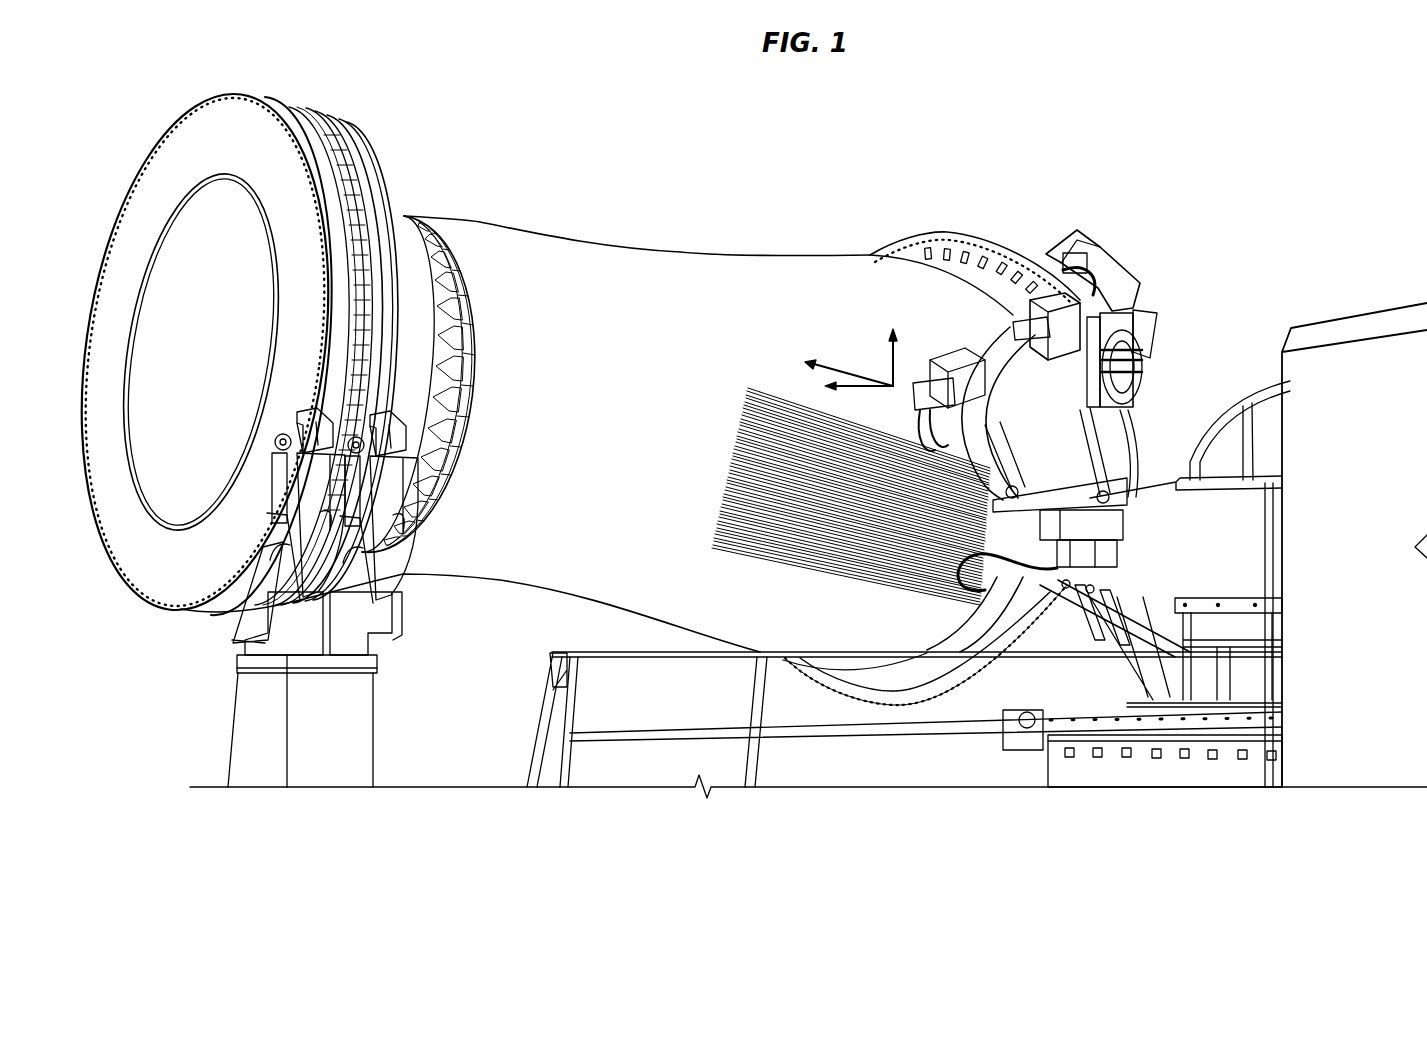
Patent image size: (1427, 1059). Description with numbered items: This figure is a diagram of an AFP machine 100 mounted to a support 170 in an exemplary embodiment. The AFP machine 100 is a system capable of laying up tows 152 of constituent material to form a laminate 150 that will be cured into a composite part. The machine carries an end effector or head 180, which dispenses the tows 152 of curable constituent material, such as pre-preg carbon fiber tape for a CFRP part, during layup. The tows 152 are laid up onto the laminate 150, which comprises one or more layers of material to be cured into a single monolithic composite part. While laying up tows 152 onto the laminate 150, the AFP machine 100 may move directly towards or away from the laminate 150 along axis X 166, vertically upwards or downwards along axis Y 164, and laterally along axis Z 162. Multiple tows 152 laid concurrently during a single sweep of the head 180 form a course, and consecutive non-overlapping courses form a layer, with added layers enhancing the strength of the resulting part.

The AFP machine 100 is at (1242, 256).
The laminate 150 is at (687, 267).
The tows 152 is at (748, 480).
The axis Z 162 is at (838, 372).
The axis Y 164 is at (896, 360).
The axis X 166 is at (857, 390).
The support 170 is at (1157, 497).
The end effector/head 180 is at (947, 360).